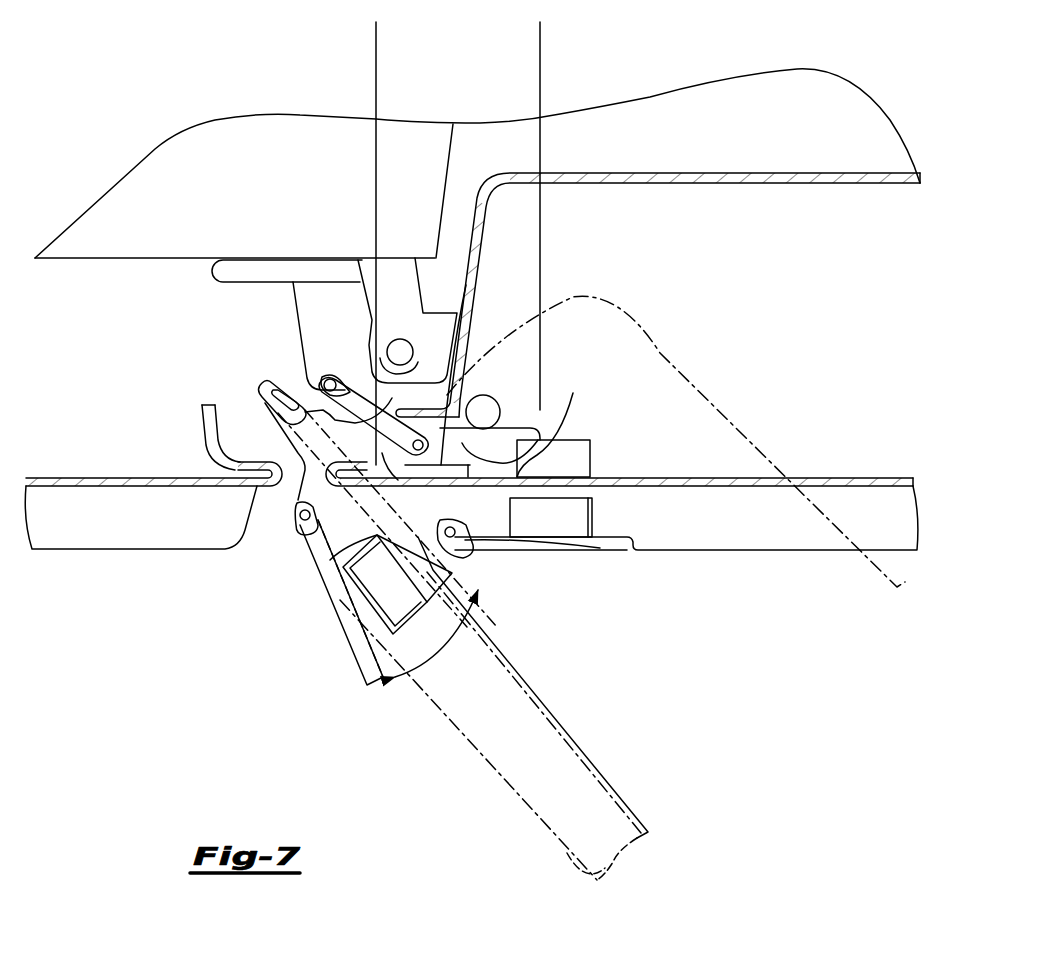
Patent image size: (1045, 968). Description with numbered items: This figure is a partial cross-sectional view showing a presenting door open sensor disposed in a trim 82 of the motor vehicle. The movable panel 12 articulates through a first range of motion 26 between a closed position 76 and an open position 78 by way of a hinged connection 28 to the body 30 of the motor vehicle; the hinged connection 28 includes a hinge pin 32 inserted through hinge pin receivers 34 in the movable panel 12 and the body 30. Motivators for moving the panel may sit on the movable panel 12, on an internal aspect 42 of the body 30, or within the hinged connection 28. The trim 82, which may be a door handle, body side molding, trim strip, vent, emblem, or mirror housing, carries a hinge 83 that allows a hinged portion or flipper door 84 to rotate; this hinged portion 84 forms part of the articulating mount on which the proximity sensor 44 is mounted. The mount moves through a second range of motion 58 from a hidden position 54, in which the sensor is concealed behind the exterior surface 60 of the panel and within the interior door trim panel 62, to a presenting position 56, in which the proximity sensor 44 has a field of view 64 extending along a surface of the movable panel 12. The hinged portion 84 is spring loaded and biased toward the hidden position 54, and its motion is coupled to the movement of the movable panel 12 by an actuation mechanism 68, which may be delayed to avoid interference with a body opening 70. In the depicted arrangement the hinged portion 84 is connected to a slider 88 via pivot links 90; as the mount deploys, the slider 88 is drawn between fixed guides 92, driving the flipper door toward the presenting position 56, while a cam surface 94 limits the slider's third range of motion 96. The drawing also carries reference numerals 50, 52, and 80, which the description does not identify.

The movable panel 12 is at (857, 455).
The first range of motion 26 is at (812, 553).
The hinged connection 28 is at (246, 282).
The body 30 is at (183, 256).
The hinge pin 32 is at (400, 340).
The hinge pin receivers 34 is at (400, 287).
The internal aspect 42 is at (388, 240).
The proximity sensor 44 is at (580, 450).
The body panel 50 is at (823, 477).
The latch bracket 52 is at (330, 562).
The hidden position 54 is at (600, 465).
The presenting position 56 is at (388, 695).
The second range of motion 58 is at (473, 608).
The exterior surface 60 is at (830, 550).
The interior door trim panel 62 is at (820, 176).
The field of view 64 is at (410, 698).
The actuation mechanism 68 is at (512, 390).
The body opening 70 is at (262, 538).
The closed position 76 is at (918, 565).
The open position 78 is at (568, 870).
The hook lever 80 is at (370, 390).
The trim 82 is at (93, 527).
The hinge 83 is at (300, 510).
The hinged portion 84 is at (583, 550).
The slider 88 is at (482, 447).
The pivot link 90 is at (373, 429).
The fixed guides 92 is at (483, 398).
The cam surface 94 is at (498, 422).
The third range of motion 96 is at (378, 50).